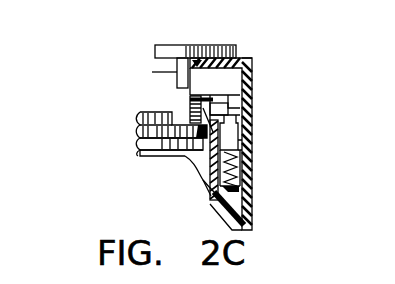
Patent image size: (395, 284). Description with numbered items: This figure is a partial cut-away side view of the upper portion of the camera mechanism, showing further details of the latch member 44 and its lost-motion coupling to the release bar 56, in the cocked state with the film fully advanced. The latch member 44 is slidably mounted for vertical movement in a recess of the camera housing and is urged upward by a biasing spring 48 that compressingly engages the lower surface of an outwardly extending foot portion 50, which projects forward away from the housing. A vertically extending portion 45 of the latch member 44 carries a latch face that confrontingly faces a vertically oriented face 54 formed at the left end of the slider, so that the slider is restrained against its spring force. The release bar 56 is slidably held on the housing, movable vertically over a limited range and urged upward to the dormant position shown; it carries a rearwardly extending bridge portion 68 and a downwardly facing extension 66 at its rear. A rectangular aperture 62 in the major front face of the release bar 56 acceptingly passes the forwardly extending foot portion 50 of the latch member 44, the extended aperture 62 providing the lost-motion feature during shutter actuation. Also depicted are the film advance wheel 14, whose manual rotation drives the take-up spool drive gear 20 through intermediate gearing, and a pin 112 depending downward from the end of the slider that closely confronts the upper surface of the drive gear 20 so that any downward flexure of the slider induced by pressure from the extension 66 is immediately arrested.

The film advance wheel 14 is at (157, 113).
The take-up spool drive gear 20 is at (138, 135).
The latch member 44 is at (232, 131).
The vertically extending portion 45 is at (200, 178).
The biasing spring 48 is at (206, 188).
The foot portion 50 is at (243, 166).
The vertically oriented face 54 is at (232, 100).
The release bar 56 is at (262, 71).
The rectangular aperture 62 is at (240, 172).
The downwardly facing extension 66 is at (152, 72).
The bridge portion 68 is at (255, 45).
The pin 112 is at (198, 113).